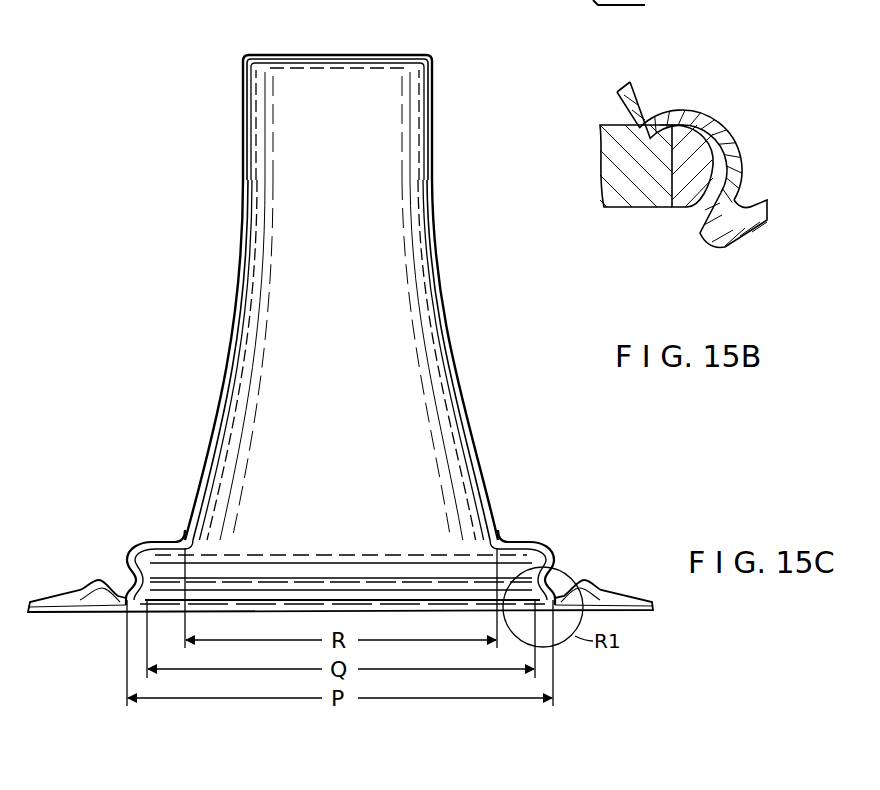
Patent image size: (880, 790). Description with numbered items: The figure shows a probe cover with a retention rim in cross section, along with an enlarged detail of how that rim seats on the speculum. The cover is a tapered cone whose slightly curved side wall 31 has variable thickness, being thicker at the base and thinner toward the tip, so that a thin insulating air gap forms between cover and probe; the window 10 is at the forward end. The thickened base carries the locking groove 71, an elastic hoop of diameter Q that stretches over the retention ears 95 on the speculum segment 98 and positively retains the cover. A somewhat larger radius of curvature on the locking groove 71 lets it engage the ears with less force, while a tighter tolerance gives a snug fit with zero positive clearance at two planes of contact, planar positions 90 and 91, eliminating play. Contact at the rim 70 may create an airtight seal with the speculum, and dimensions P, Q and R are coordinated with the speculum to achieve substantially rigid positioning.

In FIG. 15C, the window 10 is at (338, 53).
In FIG. 15C, the side wall 31 is at (443, 181).
In FIG. 15C, the rim 70 is at (507, 535).
In FIG. 15B, the locking groove 71 is at (742, 139).
In FIG. 15C, the locking groove 71 is at (560, 555).
In FIG. 15B, the planar position 90 is at (674, 121).
In FIG. 15B, the planar position 91 is at (702, 205).
In FIG. 15B, the retention ears 95 is at (675, 211).
In FIG. 15B, the segment 98 is at (615, 211).